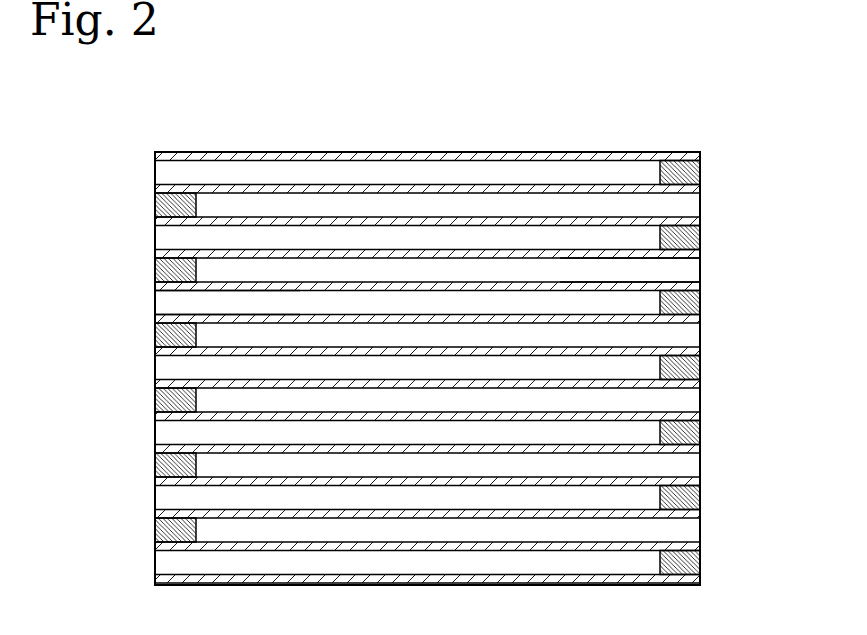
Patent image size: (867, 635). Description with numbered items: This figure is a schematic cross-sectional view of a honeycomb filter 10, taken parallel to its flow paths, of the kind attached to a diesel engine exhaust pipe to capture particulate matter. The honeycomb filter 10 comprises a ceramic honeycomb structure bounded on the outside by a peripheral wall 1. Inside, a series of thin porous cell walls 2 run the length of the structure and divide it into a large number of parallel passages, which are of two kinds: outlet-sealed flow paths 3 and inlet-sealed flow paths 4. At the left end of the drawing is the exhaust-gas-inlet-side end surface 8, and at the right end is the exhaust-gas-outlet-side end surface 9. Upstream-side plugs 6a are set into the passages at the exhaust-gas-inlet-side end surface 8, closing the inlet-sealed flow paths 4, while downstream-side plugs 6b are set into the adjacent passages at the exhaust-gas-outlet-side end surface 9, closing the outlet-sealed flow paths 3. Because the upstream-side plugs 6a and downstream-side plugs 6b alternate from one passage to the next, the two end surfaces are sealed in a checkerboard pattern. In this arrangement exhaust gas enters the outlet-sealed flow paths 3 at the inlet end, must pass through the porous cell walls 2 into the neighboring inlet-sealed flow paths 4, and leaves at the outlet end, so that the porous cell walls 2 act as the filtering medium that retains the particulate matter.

The honeycomb filter 10 is at (205, 136).
The peripheral wall 1 is at (352, 157).
The porous cell walls 2 is at (473, 188).
The exhaust-gas-outlet-side end surface 9 is at (700, 206).
The exhaust-gas-inlet-side end surface 8 is at (155, 243).
The outlet-sealed flow paths 3 is at (168, 303).
The inlet-sealed flow paths 4 is at (688, 272).
The upstream-side plugs 6a is at (173, 402).
The downstream-side plugs 6b is at (692, 362).